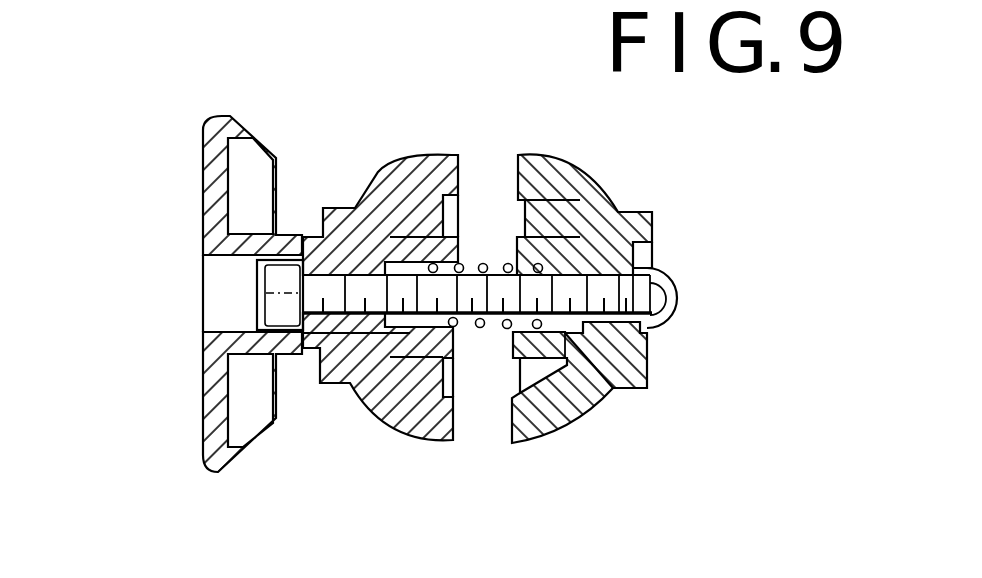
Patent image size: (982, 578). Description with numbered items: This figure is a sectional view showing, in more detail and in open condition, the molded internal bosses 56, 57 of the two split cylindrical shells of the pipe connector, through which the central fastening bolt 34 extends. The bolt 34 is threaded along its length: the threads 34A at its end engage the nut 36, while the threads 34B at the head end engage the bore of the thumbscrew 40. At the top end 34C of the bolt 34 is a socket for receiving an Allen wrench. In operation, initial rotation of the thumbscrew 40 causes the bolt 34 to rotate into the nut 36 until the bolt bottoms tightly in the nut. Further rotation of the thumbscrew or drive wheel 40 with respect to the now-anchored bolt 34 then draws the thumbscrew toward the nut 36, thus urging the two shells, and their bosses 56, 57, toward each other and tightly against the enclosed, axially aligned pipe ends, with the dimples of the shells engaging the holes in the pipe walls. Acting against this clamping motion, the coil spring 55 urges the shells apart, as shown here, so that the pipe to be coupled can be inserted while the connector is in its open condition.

The bolt 34 is at (322, 284).
The threads at the end of the bolt 34A is at (648, 352).
The threads at the head end of the bolt 34B is at (410, 297).
The top end of the bolt 34C is at (258, 282).
The nut 36 is at (673, 280).
The thumbscrew 40 is at (207, 188).
The coil spring 55 is at (488, 330).
The boss 56 is at (383, 193).
The boss 57 is at (590, 205).